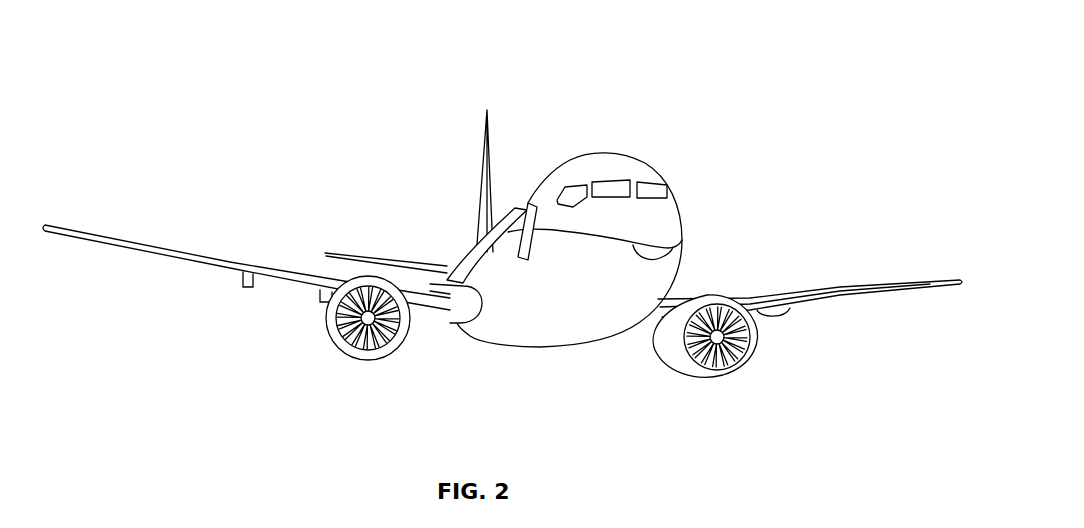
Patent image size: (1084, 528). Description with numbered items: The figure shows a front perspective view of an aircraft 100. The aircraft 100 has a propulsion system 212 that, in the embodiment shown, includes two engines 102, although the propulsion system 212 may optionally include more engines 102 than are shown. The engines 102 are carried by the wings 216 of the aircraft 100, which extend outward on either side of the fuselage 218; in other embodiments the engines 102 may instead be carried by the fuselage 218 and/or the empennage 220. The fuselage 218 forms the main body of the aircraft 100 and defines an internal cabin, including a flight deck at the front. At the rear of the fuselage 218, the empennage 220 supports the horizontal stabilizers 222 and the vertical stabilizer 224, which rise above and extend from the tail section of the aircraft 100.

The aircraft 100 is at (272, 58).
The engine 102 is at (363, 360).
The propulsion system 212 is at (770, 354).
The wing 216 is at (167, 250).
The fuselage 218 is at (680, 245).
The empennage 220 is at (470, 246).
The horizontal stabilizer 222 is at (360, 254).
The vertical stabilizer 224 is at (482, 143).